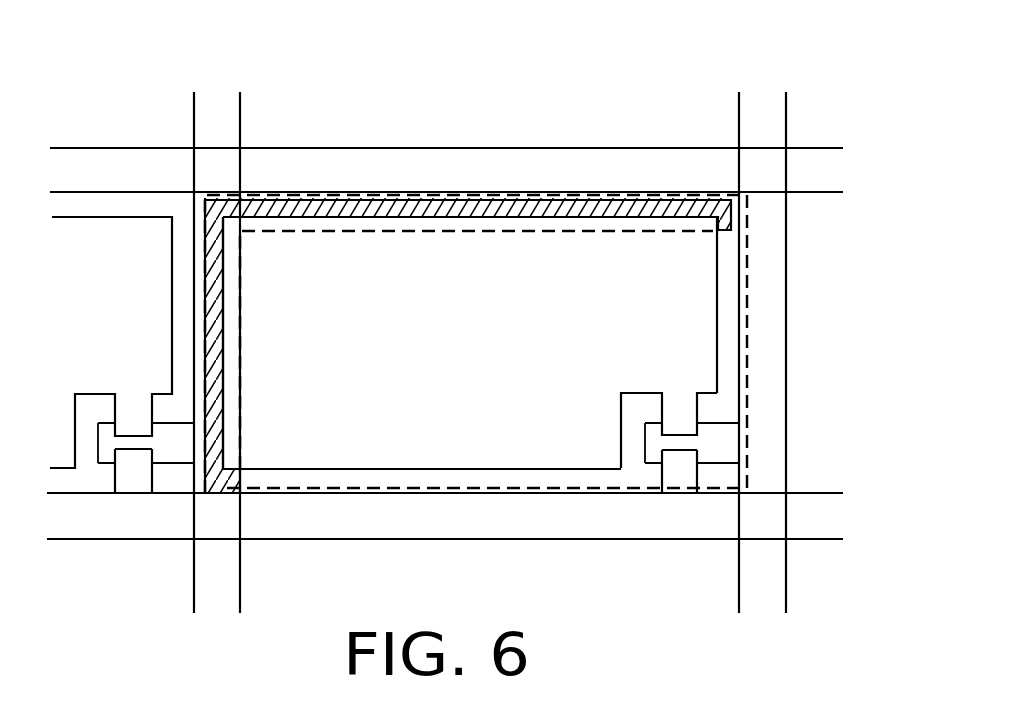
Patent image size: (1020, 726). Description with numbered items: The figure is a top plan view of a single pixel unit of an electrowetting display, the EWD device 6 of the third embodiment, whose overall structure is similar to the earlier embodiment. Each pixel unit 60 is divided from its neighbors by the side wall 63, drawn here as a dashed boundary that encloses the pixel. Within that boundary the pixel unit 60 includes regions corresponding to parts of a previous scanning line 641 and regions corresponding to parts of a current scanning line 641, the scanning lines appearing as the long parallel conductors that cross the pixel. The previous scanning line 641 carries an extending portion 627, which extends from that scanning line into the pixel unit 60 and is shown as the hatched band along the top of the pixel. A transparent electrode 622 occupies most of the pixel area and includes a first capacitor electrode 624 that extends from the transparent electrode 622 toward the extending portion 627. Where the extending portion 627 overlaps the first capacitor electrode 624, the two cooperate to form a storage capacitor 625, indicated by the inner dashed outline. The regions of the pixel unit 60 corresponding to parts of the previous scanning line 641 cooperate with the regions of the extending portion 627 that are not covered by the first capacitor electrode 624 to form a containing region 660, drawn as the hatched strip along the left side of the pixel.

The EWD device 6 is at (449, 47).
The pixel unit 60 is at (352, 148).
The scanning line 641 is at (218, 105).
The containing region 660 is at (203, 238).
The side wall 63 is at (653, 195).
The transparent electrode 622 is at (693, 292).
The first capacitor electrode 624 is at (462, 223).
The storage capacitor 625 is at (577, 233).
The extending portion 627 is at (515, 208).